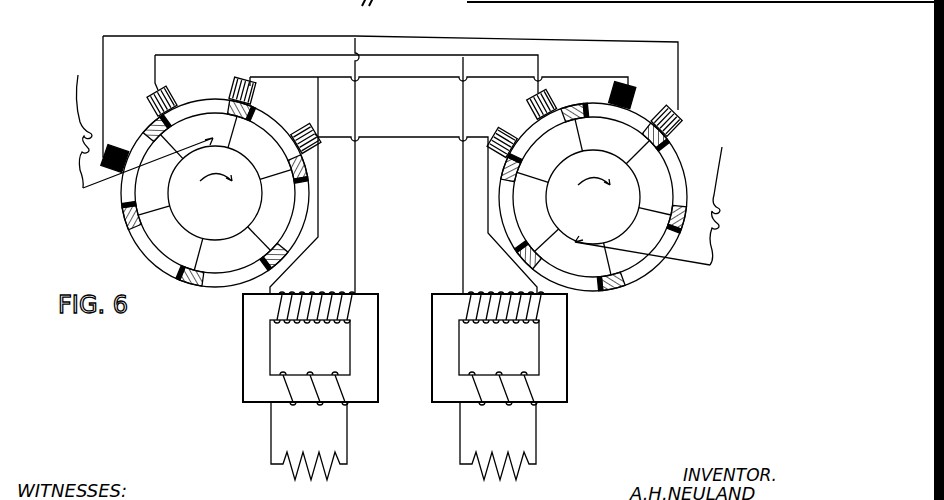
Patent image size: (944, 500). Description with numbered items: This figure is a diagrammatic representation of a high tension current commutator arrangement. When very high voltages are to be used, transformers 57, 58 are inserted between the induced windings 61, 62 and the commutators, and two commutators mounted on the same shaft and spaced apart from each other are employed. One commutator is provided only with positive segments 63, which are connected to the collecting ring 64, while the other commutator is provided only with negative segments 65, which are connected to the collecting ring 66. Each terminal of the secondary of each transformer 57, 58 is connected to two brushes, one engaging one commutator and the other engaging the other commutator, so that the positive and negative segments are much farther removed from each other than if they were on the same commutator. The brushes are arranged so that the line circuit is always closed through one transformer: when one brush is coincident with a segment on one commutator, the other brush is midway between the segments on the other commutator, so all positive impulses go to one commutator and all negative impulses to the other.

The transformer 57 is at (310, 348).
The transformer 58 is at (499, 348).
The induced winding 61 is at (309, 451).
The induced winding 62 is at (498, 451).
The positive segments 63 is at (516, 176).
The collecting ring 64 is at (634, 219).
The negative segments 65 is at (293, 184).
The collecting ring 66 is at (183, 215).